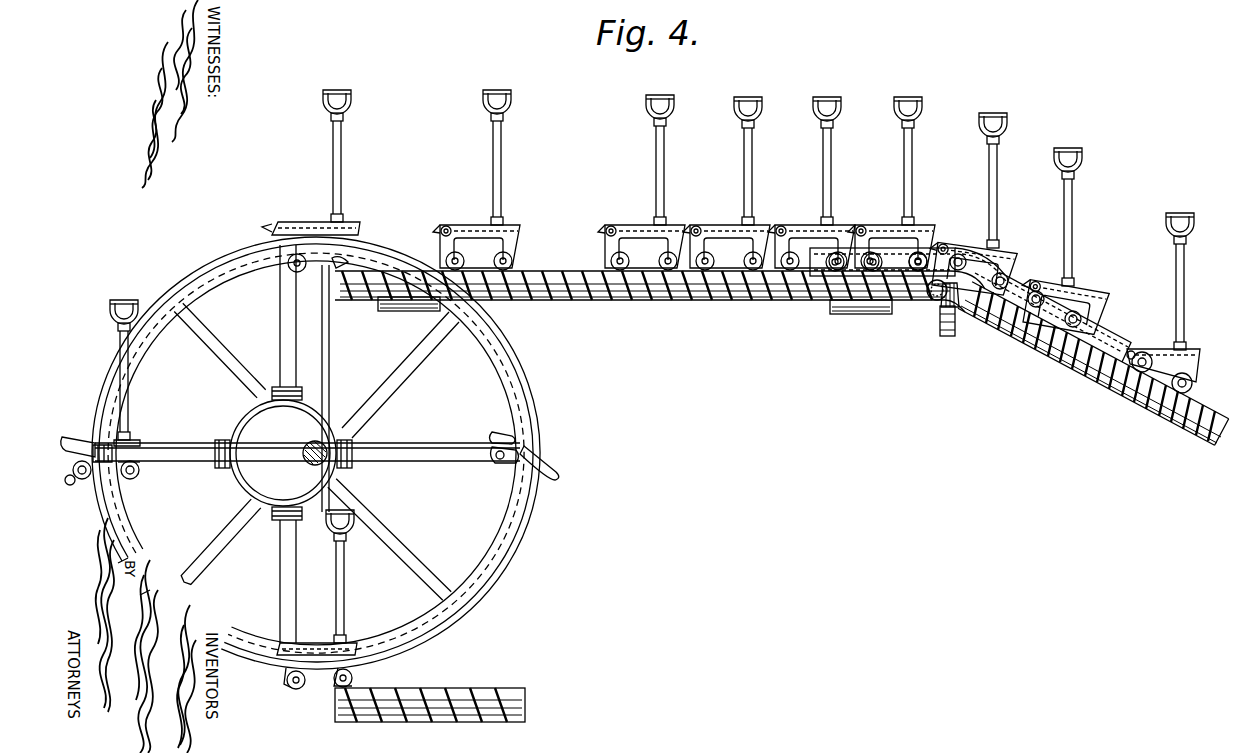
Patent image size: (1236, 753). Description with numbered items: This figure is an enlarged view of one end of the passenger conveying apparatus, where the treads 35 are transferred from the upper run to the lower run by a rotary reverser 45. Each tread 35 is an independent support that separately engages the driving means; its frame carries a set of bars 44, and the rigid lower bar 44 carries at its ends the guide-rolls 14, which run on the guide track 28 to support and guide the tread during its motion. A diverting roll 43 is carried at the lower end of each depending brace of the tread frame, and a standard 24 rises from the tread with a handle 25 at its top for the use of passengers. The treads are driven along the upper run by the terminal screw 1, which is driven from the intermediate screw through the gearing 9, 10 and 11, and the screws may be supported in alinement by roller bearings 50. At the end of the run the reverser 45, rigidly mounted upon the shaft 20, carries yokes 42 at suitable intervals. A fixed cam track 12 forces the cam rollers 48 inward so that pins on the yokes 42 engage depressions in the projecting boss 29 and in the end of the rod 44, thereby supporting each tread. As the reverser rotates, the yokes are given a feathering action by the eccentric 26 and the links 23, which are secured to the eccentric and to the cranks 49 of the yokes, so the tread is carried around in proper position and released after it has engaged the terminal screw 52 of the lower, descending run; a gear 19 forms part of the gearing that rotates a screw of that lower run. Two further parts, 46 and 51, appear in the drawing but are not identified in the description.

The terminal screw 1 is at (660, 306).
The gearing 9 is at (940, 334).
The gearing 10 is at (960, 310).
The gearing 11 is at (930, 300).
The cam track 12 is at (312, 453).
The guide-roll 14 is at (134, 479).
The gear 19 is at (66, 482).
The shaft 20 is at (320, 441).
The links 23 is at (412, 462).
The standard 24 is at (126, 395).
The handle 25 is at (352, 92).
The eccentric 26 is at (283, 453).
The guide track 28 is at (1090, 340).
The projecting boss 29 is at (447, 228).
The tread 35 is at (700, 229).
The yokes 42 is at (78, 440).
The diverting roll 43 is at (78, 482).
The bar 44 is at (520, 302).
The reverser 45 is at (330, 330).
The vertical spoke 46 is at (270, 390).
The cam rollers 48 is at (118, 480).
The cranks 49 is at (86, 466).
The roller bearings 50 is at (410, 312).
The guide roller 51 is at (858, 314).
The terminal screw 52 is at (440, 688).